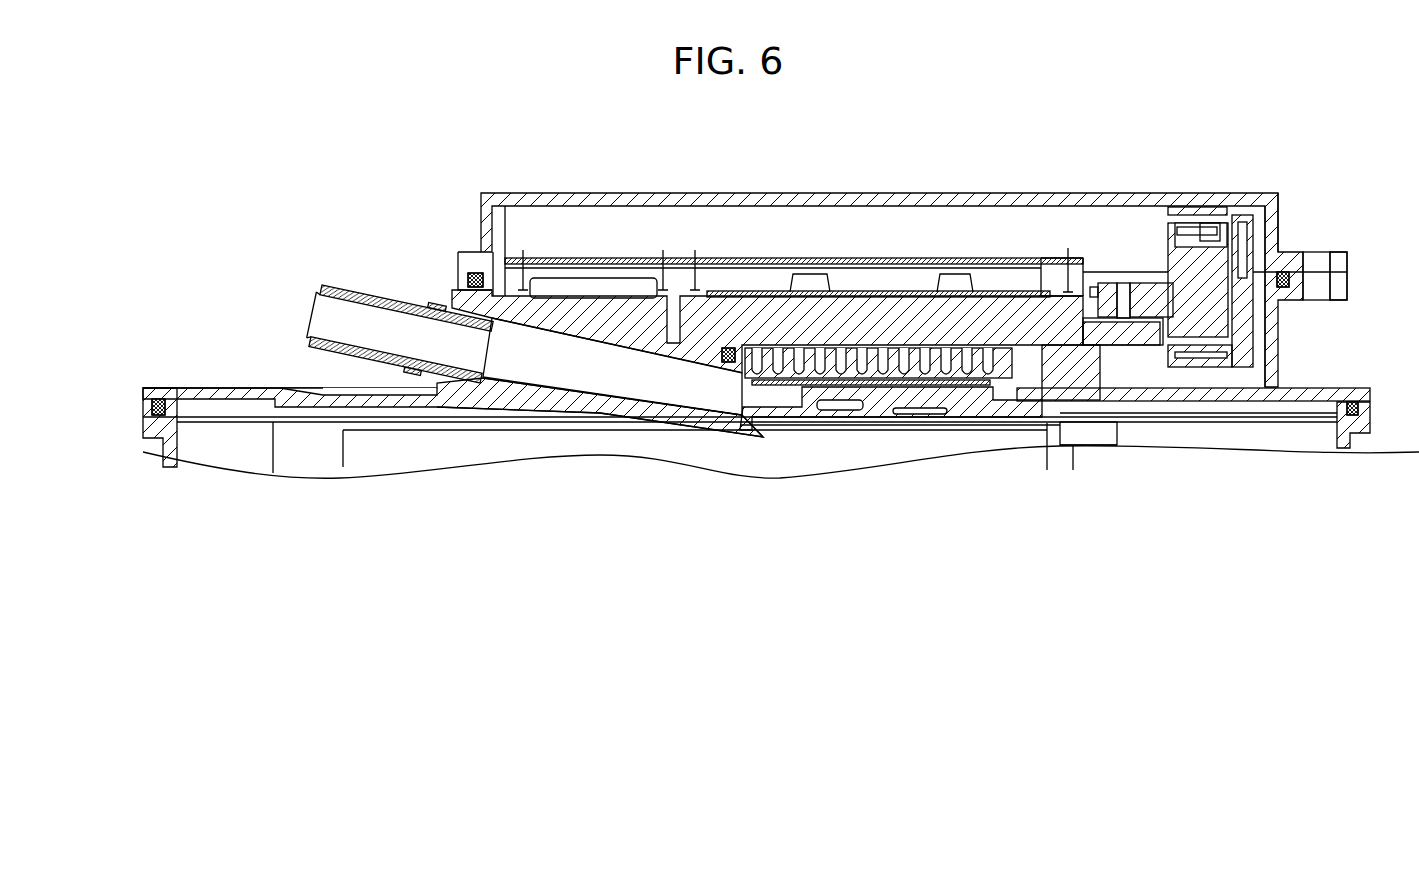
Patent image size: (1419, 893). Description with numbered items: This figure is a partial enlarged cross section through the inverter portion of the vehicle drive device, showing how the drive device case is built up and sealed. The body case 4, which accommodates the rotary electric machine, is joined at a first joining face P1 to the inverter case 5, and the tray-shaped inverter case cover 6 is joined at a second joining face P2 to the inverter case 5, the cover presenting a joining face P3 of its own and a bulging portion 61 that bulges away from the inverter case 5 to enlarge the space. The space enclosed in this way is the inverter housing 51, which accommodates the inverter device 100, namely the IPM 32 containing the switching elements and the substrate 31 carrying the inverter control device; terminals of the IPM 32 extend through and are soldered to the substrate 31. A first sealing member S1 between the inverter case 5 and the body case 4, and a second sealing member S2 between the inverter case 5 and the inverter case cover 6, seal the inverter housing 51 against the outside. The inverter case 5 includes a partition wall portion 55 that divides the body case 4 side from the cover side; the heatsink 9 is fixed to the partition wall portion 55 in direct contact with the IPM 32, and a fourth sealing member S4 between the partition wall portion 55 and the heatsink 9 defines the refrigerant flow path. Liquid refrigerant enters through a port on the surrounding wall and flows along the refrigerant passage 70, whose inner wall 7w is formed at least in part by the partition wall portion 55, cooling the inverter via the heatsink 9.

The bulging portion 61 is at (820, 191).
The inverter case cover 6 is at (1262, 193).
The second sealing member S2 is at (1284, 276).
The joining face P3 is at (1338, 279).
The inverter case 5 is at (1280, 332).
The first sealing member S1 is at (147, 406).
The body case 4 is at (1350, 440).
The first joining face P1 is at (218, 420).
The refrigerant passage 70 is at (553, 360).
The inner wall of the flow path 7w is at (598, 383).
The fourth sealing member S4 is at (726, 362).
The partition wall portion 55 is at (755, 432).
The heatsink 9 is at (887, 313).
The IPM 32 is at (738, 273).
The inverter housing 51 is at (672, 293).
The substrate 31 is at (1023, 254).
The second joining face P2 is at (498, 271).
The inverter device 100 is at (1095, 252).